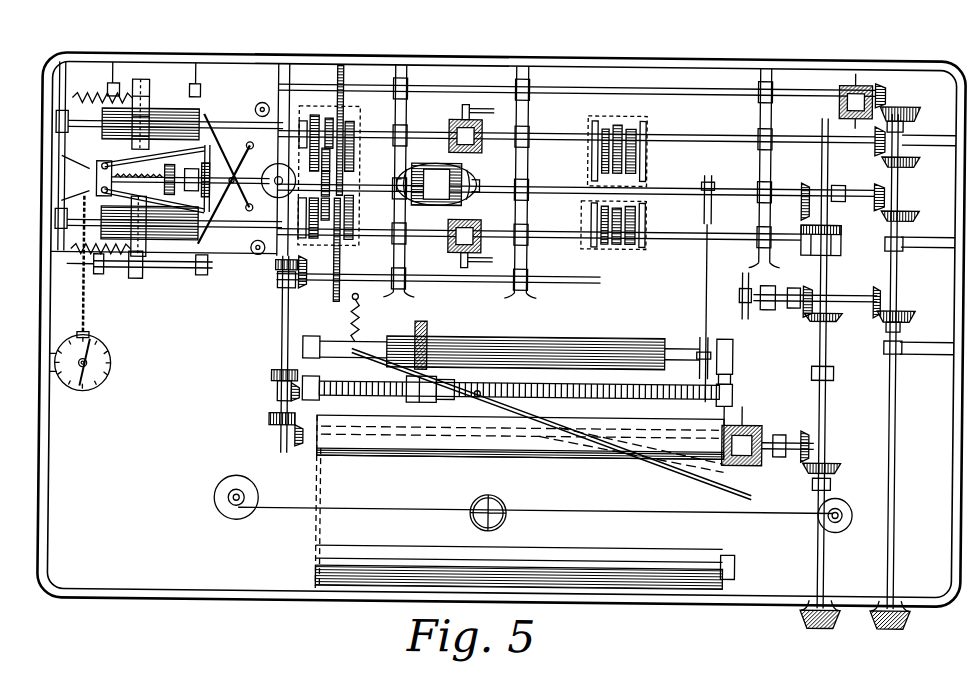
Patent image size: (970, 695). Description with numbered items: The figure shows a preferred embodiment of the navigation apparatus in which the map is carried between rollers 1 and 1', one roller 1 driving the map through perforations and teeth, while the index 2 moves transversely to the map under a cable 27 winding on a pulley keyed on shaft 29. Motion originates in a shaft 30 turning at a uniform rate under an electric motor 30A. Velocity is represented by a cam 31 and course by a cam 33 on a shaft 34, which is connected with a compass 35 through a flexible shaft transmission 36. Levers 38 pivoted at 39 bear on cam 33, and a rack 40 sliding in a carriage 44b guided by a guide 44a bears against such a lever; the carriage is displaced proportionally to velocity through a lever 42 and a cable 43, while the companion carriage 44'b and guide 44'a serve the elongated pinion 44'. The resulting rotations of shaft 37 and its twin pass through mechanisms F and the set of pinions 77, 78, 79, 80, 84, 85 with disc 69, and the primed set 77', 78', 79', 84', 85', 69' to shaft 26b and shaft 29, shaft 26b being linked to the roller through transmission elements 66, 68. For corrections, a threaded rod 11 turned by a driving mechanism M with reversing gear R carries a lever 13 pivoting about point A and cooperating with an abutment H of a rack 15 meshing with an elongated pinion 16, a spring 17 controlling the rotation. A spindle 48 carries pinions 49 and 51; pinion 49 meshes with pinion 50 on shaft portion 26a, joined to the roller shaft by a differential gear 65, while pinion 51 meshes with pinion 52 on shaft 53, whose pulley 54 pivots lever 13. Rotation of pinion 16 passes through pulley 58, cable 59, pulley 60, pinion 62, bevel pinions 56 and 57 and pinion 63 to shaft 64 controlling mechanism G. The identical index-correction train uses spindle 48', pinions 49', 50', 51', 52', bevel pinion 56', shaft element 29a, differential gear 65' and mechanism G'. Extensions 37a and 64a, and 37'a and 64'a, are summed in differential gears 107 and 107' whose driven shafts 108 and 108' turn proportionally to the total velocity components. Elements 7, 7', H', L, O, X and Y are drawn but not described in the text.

The roller 1 is at (520, 448).
The roller 1' is at (525, 503).
The index 2 is at (504, 507).
The gear 7 is at (344, 223).
The pulley 7' is at (260, 168).
The threaded rod 11 is at (590, 390).
The lever 13 is at (690, 468).
The rack 15 is at (428, 329).
The pinion 16 is at (503, 340).
The spring 17 is at (360, 325).
The shaft portion 26a is at (795, 450).
The shaft 26b is at (470, 282).
The cable 27 is at (523, 500).
The shaft 29 is at (567, 85).
The shaft element 29a is at (876, 122).
The shaft 30 is at (560, 186).
The electric motor 30A is at (437, 184).
The cam 31 is at (265, 168).
The cam 33 is at (207, 176).
The shaft 34 is at (175, 176).
The compass 35 is at (103, 350).
The transmission 36 is at (72, 290).
The shaft 37 is at (226, 179).
The shaft extension 37a is at (433, 232).
The shaft extension 37'a is at (428, 121).
The lever 38 is at (190, 190).
The pivot 39 is at (95, 185).
The rack 40 is at (175, 174).
The lever 42 is at (235, 193).
The cable 43 is at (206, 272).
The guide 44a is at (196, 280).
The carriage 44b is at (145, 283).
The pinion 44' is at (96, 168).
The guide 44'a is at (136, 158).
The carriage 44'b is at (153, 79).
The spindle 48 is at (828, 373).
The spindle 48' is at (904, 372).
The pinion 49 is at (837, 457).
The pinion 49' is at (913, 116).
The pinion 50 is at (818, 438).
The pinion 50' is at (896, 93).
The pinion 51 is at (817, 312).
The pinion 51' is at (908, 314).
The pinion 52 is at (815, 290).
The pinion 52' is at (870, 289).
The shaft 53 is at (766, 308).
The pulley 54 is at (741, 278).
The bevel pinion 56 is at (838, 243).
The bevel pinion 56' is at (911, 204).
The bevel pinion 57 is at (840, 225).
The pulley 58 is at (700, 343).
The cable 59 is at (708, 252).
The pulley 60 is at (712, 182).
The pinion 62 is at (806, 182).
The pinion 63 is at (790, 284).
The shaft 64 is at (670, 253).
The shaft extension 64a is at (560, 231).
The shaft extension 64'a is at (558, 123).
The differential gear 65 is at (786, 435).
The differential gear 65' is at (841, 101).
The transmission element 66 is at (276, 284).
The transmission element 68 is at (280, 427).
The disc 69 is at (355, 258).
The disc 69' is at (350, 132).
The pinion 77 is at (311, 251).
The pinion 77' is at (329, 168).
The pinion 78 is at (360, 217).
The pinion 78' is at (368, 138).
The pinion 79 is at (358, 250).
The pinion 79' is at (353, 127).
The pinion 80 is at (330, 175).
The pinion 84 is at (291, 218).
The pinion 84' is at (294, 141).
The pinion 85 is at (350, 206).
The pinion 85' is at (353, 155).
The differential gear 107 is at (451, 239).
The differential gear 107' is at (454, 137).
The driven shaft 108 is at (485, 260).
The driven shaft 108' is at (487, 117).
The pivot point A is at (480, 389).
The mechanism F is at (343, 120).
The mechanism G is at (628, 147).
The mechanism G' is at (628, 225).
The abutment H is at (410, 394).
The nut part H' is at (448, 381).
The lever arm L is at (135, 200).
The driving mechanism M is at (270, 376).
The link O is at (704, 390).
The reversing gear R is at (288, 393).
The shaft X is at (190, 185).
The lever arm Y is at (118, 163).